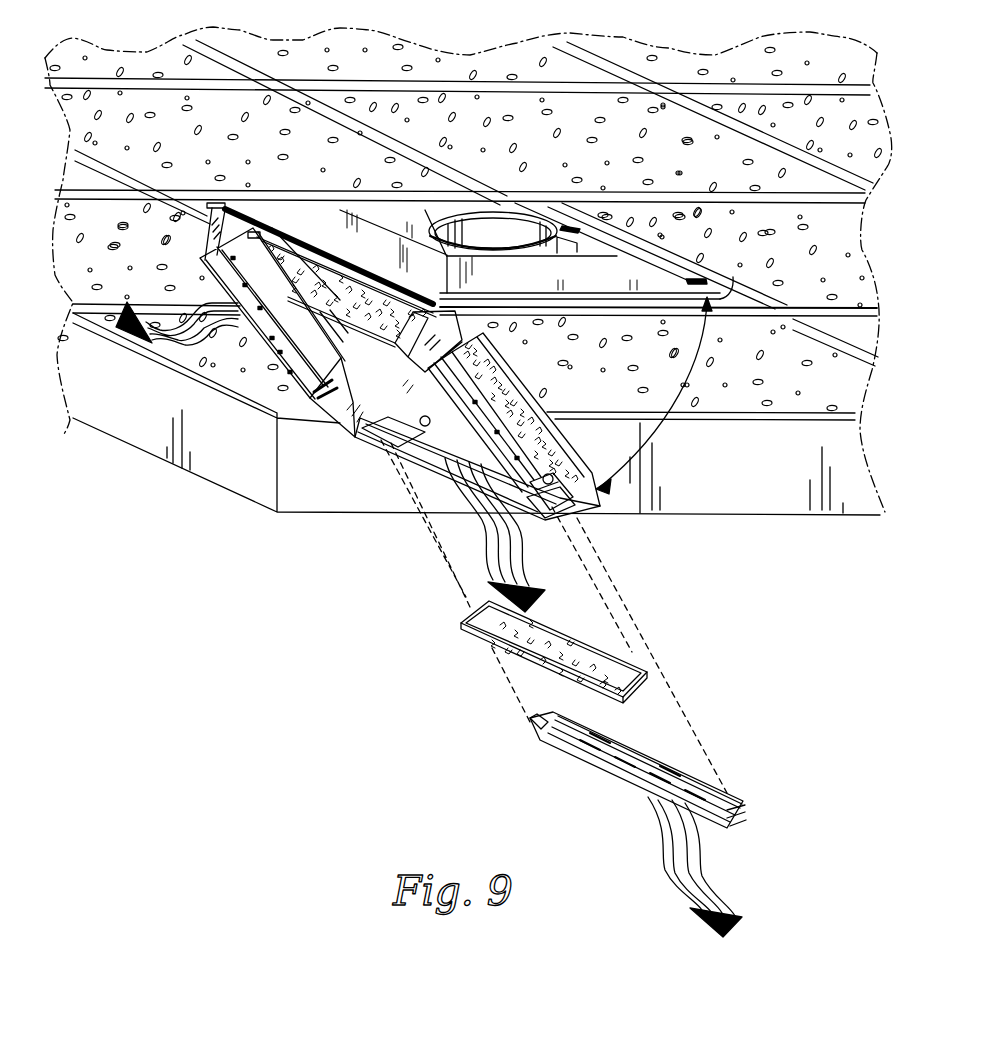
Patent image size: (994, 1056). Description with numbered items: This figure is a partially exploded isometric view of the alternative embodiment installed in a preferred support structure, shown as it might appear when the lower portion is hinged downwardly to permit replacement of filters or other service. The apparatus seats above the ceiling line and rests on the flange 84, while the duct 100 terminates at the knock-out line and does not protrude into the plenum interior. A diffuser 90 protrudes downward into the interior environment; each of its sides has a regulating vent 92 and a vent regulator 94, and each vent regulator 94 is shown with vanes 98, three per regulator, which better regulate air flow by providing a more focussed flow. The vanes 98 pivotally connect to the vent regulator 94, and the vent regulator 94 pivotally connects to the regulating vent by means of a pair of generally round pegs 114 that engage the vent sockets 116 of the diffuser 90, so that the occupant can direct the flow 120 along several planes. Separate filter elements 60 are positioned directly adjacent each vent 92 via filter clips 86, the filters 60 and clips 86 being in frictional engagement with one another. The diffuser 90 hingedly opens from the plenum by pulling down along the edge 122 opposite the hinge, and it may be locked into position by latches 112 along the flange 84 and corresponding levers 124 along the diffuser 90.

The duct 100 is at (523, 213).
The flange 84 is at (743, 297).
The latch 112 is at (720, 287).
The regulating vent 92 is at (432, 450).
The diffuser 90 is at (358, 418).
The vent socket 116 is at (353, 420).
The lever 124 is at (397, 446).
The filter clip 86 is at (573, 513).
The edge 122 is at (555, 540).
The flow 120 is at (476, 530).
The filter element 60 is at (595, 640).
The vent regulator 94 is at (700, 780).
The peg 114 is at (530, 728).
The vane 98 is at (747, 813).